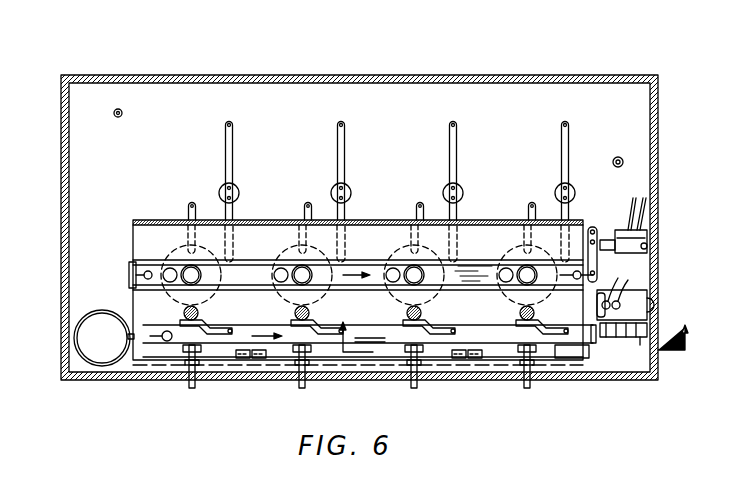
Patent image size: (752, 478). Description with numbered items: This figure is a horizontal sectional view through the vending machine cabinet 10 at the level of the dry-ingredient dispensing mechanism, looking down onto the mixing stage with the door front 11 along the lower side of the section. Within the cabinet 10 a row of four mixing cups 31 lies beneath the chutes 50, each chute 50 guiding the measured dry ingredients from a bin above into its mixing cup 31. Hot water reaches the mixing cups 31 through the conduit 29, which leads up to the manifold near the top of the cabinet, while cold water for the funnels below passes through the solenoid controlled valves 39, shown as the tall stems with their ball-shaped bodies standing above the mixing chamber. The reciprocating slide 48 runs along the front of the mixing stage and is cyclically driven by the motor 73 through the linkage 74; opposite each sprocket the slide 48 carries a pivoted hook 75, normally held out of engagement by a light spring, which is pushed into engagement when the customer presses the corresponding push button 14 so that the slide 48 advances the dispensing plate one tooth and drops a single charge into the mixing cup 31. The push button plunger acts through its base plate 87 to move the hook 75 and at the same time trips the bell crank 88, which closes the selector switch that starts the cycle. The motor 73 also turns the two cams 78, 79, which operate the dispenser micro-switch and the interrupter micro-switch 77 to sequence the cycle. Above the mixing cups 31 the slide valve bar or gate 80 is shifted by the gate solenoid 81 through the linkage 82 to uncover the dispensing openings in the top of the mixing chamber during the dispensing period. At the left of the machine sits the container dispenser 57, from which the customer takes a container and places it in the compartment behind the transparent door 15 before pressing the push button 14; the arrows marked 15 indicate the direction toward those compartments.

The cabinet 10 is at (61, 248).
The conduit 29 is at (121, 117).
The solenoid controlled valve 39 is at (239, 192).
The chute 50 is at (201, 270).
The mixing cup 31 is at (396, 251).
The pivoted hook 75 is at (200, 316).
The reciprocating slide 48 is at (490, 336).
The linkage 74 is at (390, 337).
The slide valve bar or gate 80 is at (488, 266).
The base plate 87 is at (372, 355).
The bell crank 88 is at (572, 353).
The door front 11 is at (240, 386).
The push button 14 is at (528, 388).
The door 15 is at (516, 325).
The dispenser 57 is at (112, 310).
The linkage 82 is at (599, 256).
The gate solenoid 81 is at (618, 233).
The motor 73 is at (630, 296).
The cam 79 is at (621, 299).
The cam 78 is at (612, 337).
The interrupter micro-switch 77 is at (642, 339).